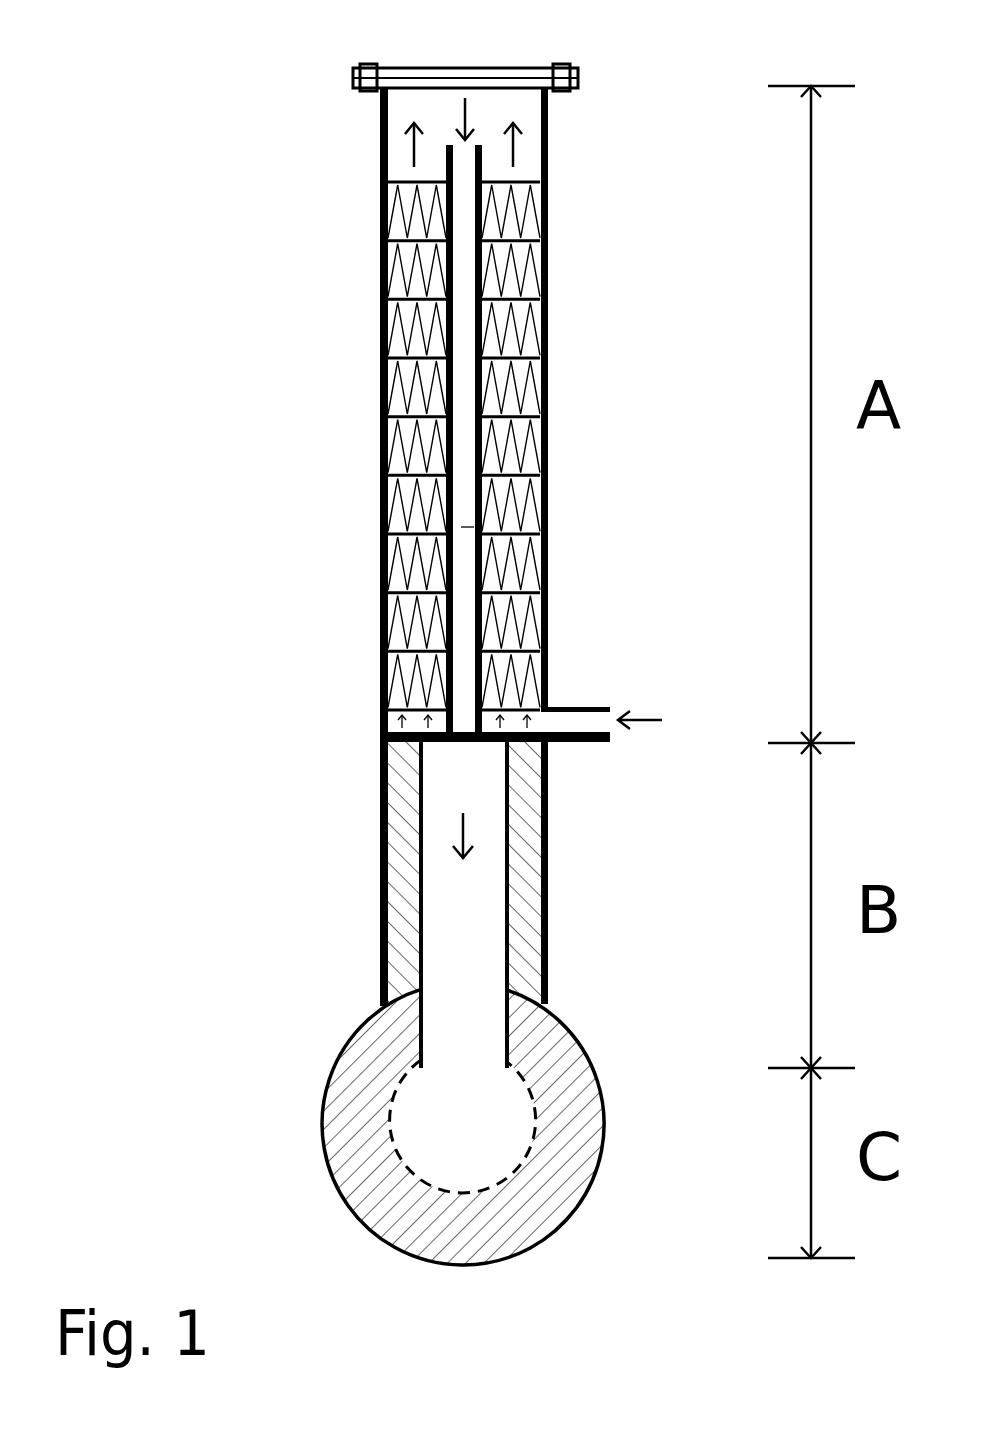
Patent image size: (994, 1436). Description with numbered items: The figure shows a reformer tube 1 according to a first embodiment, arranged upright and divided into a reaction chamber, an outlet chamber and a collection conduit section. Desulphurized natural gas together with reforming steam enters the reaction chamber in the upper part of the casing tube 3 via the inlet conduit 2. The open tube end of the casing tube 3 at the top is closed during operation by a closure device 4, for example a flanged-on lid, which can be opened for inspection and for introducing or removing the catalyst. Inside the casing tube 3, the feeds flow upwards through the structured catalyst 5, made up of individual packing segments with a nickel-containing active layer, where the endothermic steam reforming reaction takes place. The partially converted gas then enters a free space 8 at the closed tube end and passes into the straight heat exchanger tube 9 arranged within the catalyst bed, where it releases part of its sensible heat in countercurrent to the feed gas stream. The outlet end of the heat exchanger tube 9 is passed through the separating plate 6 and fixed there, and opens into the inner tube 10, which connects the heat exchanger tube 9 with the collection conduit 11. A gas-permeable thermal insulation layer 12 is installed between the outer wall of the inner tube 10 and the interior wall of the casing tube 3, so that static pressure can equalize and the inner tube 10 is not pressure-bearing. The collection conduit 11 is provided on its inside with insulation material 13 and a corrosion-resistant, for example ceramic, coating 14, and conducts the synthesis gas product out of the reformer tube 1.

The reformer tube 1 is at (246, 570).
The inlet conduit 2 is at (568, 707).
The casing tube 3 is at (548, 310).
The closure device 4 is at (466, 67).
The structured catalyst 5 is at (512, 455).
The separating plate 6 is at (545, 745).
The free space 8 is at (525, 112).
The heat exchanger tube 9 is at (462, 340).
The inner tube 10 is at (420, 886).
The collection conduit 11 is at (335, 1055).
The thermal insulation layer 12 is at (397, 792).
The insulation material 13 is at (348, 1115).
The corrosion-resistant coating 14 is at (425, 1182).